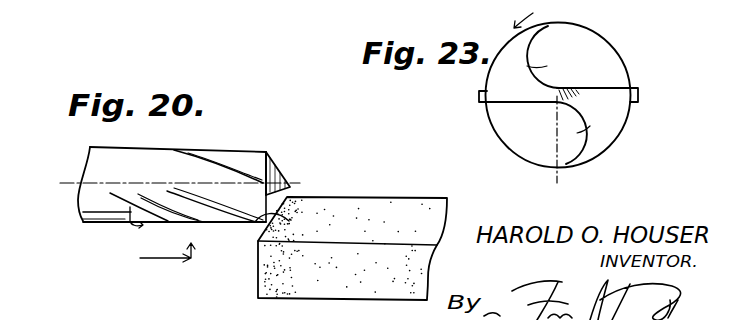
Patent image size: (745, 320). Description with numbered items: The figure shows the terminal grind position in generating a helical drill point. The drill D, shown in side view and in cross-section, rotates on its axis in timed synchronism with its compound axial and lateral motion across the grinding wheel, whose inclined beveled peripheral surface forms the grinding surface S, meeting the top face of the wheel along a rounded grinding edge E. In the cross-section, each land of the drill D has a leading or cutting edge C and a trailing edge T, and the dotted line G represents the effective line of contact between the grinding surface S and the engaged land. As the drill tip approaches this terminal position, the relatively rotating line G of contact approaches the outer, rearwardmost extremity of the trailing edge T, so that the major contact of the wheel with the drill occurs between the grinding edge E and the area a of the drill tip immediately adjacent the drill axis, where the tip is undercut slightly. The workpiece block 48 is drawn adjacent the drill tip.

In FIG. 20, the drill D is at (110, 228).
In FIG. 23, the drill D is at (485, 136).
In FIG. 20, the grinding edge E is at (290, 184).
In FIG. 20, the leading or cutting edge of drill land C is at (282, 196).
In FIG. 23, the leading or cutting edge of drill land C is at (605, 87).
In FIG. 20, the grinding surface S is at (261, 212).
In FIG. 20, the trailing edge of drill land T is at (281, 220).
In FIG. 23, the trailing edge of drill land T is at (528, 65).
In FIG. 20, the work piece 48 is at (410, 171).
In FIG. 23, the area of drill tip adjacent drill axis a is at (556, 88).
In FIG. 23, the line of contact G is at (555, 183).